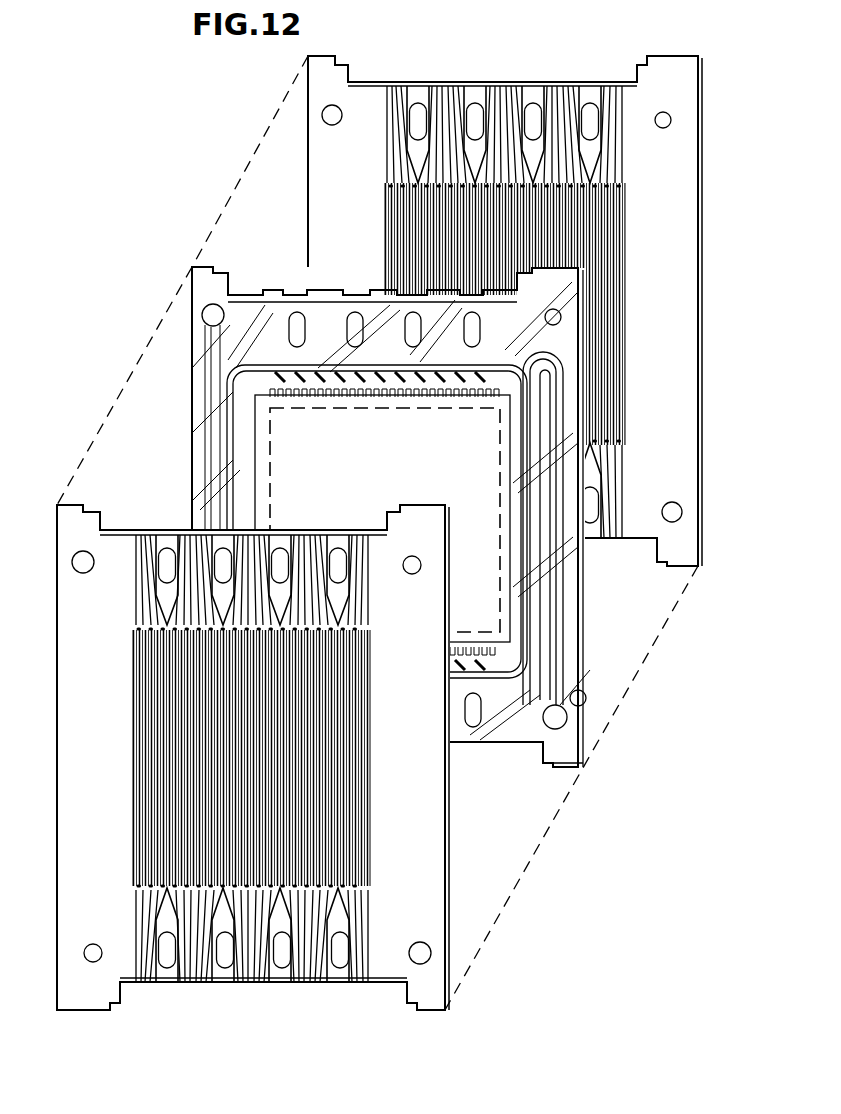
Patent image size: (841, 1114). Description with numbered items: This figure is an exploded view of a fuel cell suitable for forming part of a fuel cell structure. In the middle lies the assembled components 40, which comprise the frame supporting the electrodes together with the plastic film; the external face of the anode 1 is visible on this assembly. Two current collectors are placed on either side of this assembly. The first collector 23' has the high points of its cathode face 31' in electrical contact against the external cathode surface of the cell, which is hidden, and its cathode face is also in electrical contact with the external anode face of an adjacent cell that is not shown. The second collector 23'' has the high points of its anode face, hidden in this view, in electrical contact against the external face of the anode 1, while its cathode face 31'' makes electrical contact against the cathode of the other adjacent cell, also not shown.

The first collector 23' is at (465, 311).
The second collector 23'' is at (240, 720).
The assembled components 40 is at (186, 345).
The anode 1 is at (300, 437).
The cathode face 31' is at (709, 311).
The cathode face 31'' is at (457, 757).